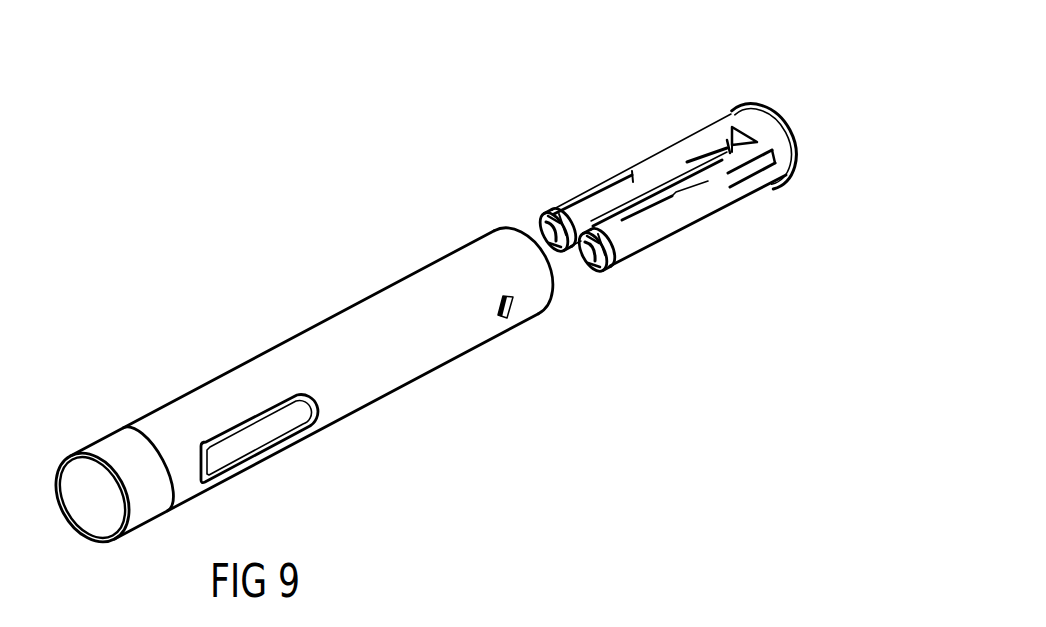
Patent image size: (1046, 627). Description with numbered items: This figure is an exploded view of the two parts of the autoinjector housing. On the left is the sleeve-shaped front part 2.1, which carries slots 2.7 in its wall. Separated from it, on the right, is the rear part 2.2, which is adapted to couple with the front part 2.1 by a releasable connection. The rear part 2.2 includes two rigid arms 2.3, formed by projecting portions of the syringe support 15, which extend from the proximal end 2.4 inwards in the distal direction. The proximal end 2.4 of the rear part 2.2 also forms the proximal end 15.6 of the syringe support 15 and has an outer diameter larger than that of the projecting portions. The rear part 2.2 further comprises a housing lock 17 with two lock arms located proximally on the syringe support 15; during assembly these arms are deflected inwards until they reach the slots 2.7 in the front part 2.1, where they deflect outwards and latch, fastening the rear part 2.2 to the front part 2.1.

The front part 2.1 is at (350, 328).
The rear part 2.2 is at (725, 103).
The rigid arms 2.3 is at (630, 175).
The proximal end 2.4 is at (780, 120).
The slots 2.7 is at (505, 319).
The syringe support 15 is at (548, 206).
The proximal end of the syringe support 15.6 is at (780, 120).
The housing lock 17 is at (697, 147).